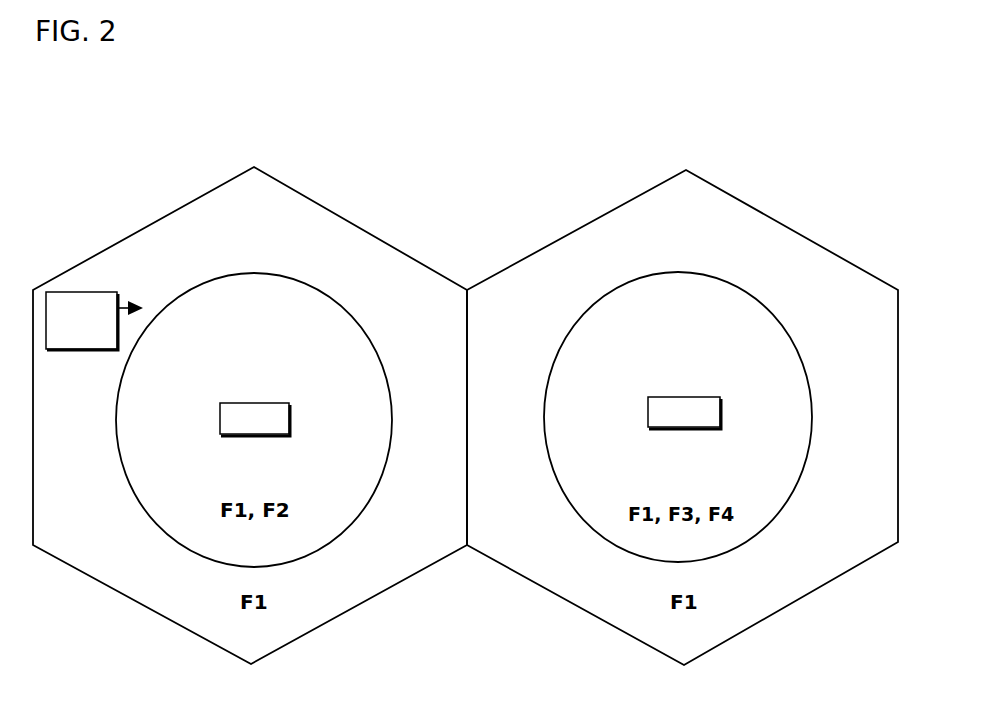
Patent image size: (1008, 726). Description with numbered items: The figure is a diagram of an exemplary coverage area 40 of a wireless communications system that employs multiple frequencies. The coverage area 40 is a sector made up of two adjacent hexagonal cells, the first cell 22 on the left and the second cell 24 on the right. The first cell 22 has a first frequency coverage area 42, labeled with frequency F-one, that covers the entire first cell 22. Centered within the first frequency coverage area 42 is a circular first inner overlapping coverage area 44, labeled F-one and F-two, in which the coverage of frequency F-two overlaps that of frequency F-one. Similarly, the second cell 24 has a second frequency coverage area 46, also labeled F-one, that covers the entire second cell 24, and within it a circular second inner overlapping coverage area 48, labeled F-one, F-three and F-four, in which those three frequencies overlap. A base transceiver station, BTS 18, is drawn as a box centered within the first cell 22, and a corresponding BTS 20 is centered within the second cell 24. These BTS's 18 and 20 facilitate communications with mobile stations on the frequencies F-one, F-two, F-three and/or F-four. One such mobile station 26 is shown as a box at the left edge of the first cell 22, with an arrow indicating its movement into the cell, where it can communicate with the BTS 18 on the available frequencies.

The coverage area 40 is at (609, 111).
The first cell 22 is at (319, 202).
The second cell 24 is at (718, 190).
The first frequency coverage area 42 is at (275, 249).
The first inner overlapping coverage area 44 is at (270, 355).
The second frequency coverage area 46 is at (700, 250).
The second inner overlapping coverage area 48 is at (700, 355).
The BTS 18 is at (290, 427).
The BTS 20 is at (721, 419).
The mobile station 26 is at (108, 292).